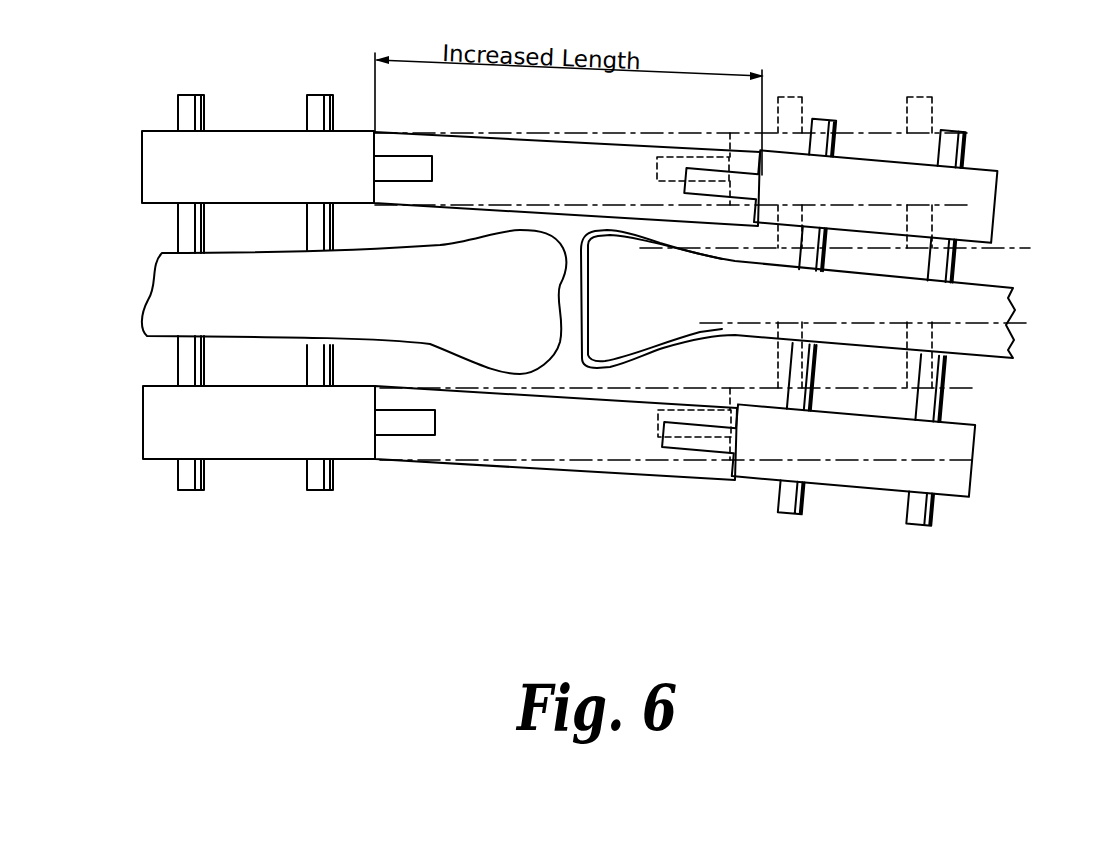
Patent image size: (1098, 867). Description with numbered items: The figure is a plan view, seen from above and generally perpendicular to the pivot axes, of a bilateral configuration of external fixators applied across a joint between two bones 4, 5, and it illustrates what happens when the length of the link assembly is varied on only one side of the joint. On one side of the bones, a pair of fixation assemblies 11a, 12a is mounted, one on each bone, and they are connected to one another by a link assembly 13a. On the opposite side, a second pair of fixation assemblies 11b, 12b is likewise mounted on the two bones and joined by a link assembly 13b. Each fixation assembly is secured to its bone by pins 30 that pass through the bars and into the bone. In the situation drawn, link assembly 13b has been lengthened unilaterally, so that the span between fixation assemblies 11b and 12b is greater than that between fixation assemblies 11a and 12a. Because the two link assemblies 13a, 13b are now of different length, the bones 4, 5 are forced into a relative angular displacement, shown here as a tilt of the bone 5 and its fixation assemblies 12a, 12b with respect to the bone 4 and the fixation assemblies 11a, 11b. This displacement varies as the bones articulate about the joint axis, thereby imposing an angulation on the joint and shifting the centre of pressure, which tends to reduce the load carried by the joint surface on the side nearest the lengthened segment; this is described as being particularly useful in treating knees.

The bone 4 is at (143, 330).
The bone 5 is at (972, 305).
The fixation assembly 11a is at (163, 447).
The fixation assembly 11b is at (162, 165).
The fixation assembly 12a is at (957, 483).
The fixation assembly 12b is at (973, 182).
The link assembly 13a is at (540, 447).
The link assembly 13b is at (473, 155).
The bone pins 30 is at (190, 490).